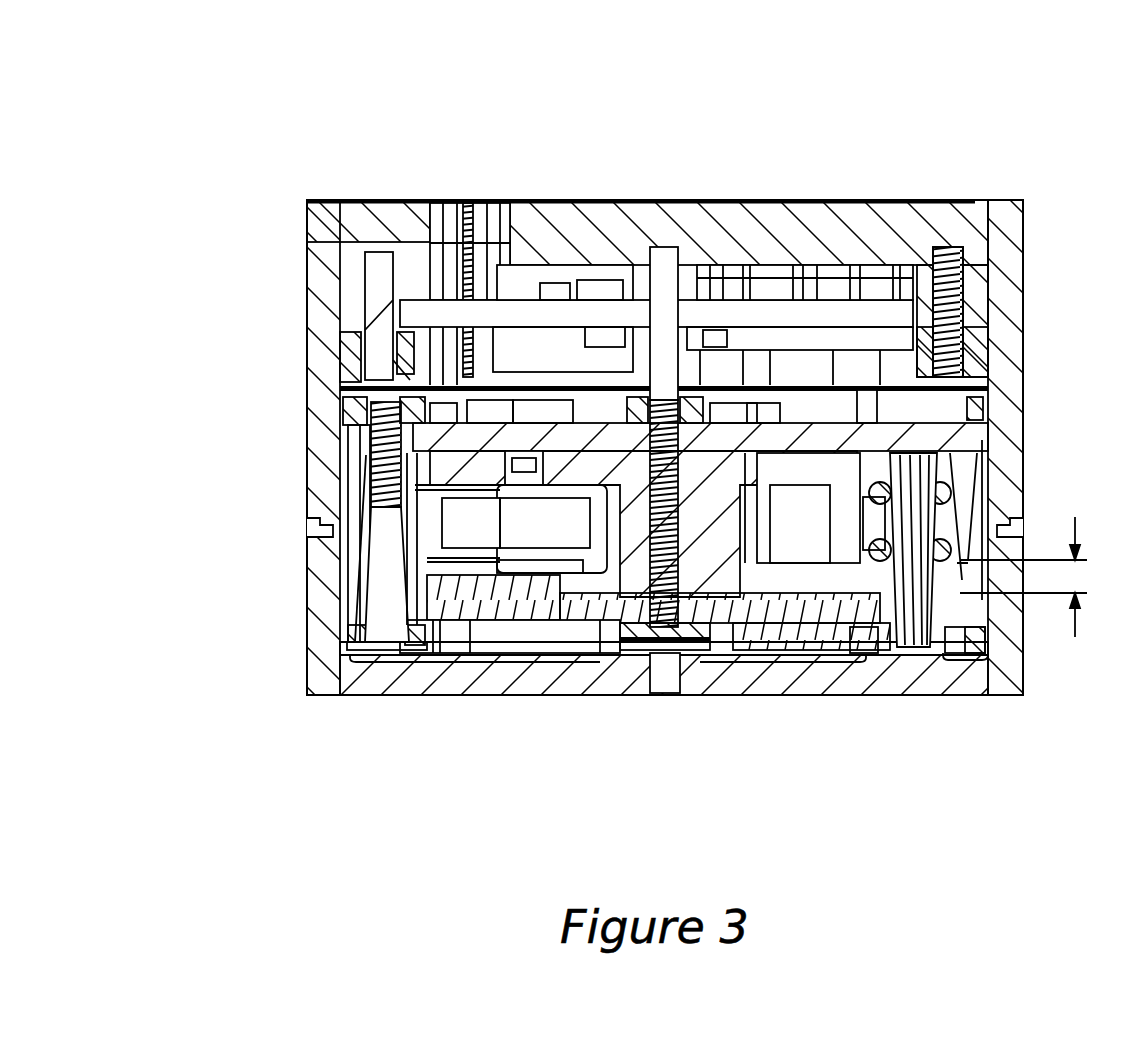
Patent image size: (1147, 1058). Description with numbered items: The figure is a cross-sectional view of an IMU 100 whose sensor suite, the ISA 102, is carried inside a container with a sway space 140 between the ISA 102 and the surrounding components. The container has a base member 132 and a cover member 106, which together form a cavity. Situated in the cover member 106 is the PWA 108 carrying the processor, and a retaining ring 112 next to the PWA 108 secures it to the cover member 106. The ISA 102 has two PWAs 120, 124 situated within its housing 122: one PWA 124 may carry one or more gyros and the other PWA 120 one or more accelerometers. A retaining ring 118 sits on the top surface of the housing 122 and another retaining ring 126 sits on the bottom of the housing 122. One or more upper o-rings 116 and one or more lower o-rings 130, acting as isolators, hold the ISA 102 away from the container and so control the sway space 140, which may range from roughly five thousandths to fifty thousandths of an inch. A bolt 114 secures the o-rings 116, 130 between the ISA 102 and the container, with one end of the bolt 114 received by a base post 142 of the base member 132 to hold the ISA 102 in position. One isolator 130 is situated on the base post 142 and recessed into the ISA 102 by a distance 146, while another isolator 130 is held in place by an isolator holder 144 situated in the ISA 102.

The IMU 100 is at (824, 98).
The ISA 102 is at (350, 505).
The cover member 106 is at (332, 262).
The PWA 108 is at (548, 312).
The retaining ring 112 is at (342, 352).
The bolt 114 is at (965, 460).
The upper o-ring 116 is at (347, 481).
The retaining ring 118 is at (358, 407).
The PWA 120 is at (425, 440).
The housing 122 is at (360, 580).
The PWA 124 is at (472, 640).
The retaining ring 126 is at (358, 645).
The lower o-ring 130 is at (390, 554).
The base member 132 is at (375, 655).
The sway space 140 is at (1003, 425).
The base post 142 is at (887, 640).
The isolator holder 144 is at (537, 545).
The distance 146 is at (1032, 577).